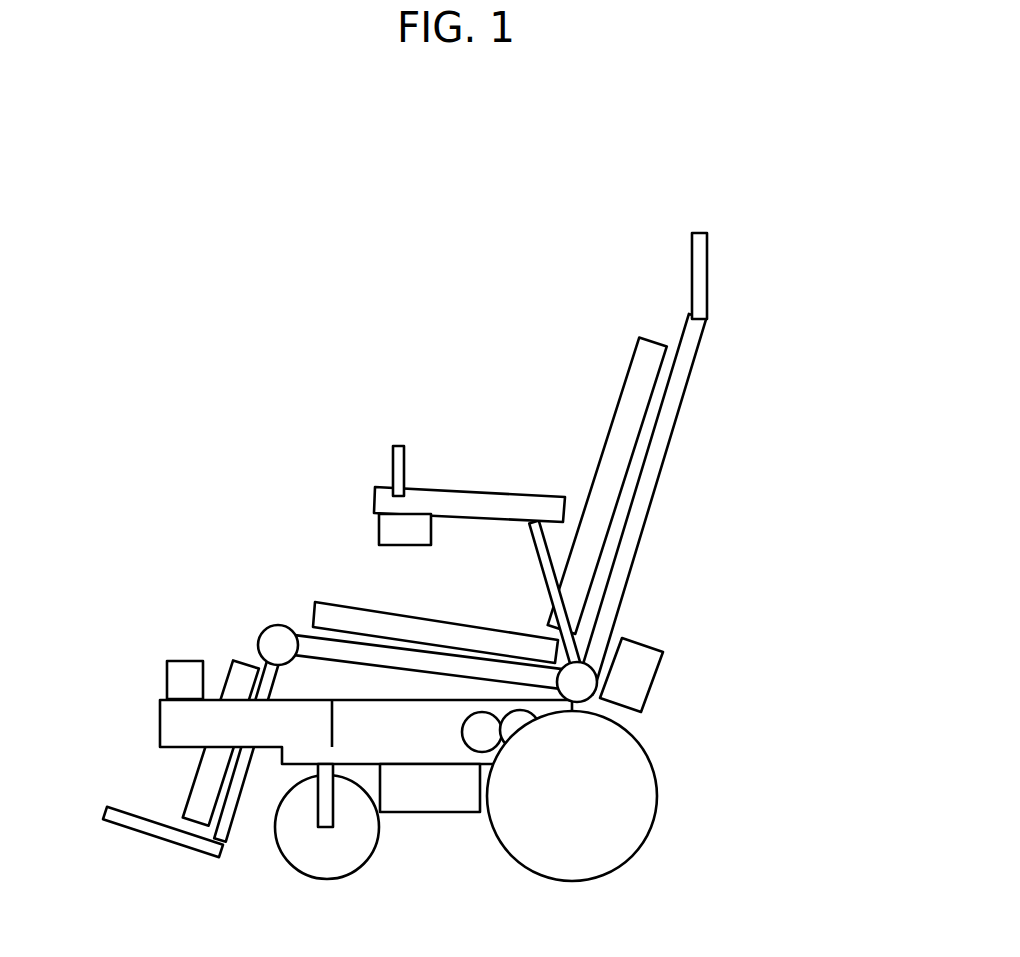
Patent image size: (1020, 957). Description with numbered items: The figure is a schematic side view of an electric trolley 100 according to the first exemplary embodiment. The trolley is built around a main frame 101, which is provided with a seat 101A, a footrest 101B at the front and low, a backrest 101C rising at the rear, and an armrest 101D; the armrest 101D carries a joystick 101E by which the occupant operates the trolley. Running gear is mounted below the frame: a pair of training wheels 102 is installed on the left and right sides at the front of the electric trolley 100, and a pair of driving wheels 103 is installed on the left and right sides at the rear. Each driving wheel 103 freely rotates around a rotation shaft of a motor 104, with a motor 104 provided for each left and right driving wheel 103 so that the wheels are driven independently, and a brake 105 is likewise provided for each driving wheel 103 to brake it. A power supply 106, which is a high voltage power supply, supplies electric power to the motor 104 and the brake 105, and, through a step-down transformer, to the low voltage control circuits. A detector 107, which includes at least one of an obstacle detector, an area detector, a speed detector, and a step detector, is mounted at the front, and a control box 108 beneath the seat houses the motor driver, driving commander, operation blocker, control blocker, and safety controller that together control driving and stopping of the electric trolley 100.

The electric trolley 100 is at (337, 158).
The main frame 101 is at (682, 470).
The seat 101A is at (343, 598).
The footrest 101B is at (150, 852).
The backrest 101C is at (647, 317).
The armrest 101D is at (515, 485).
The joystick 101E is at (398, 446).
The training wheel 102 is at (283, 855).
The driving wheel 103 is at (500, 858).
The motor 104 is at (520, 711).
The brake 105 is at (484, 712).
The power supply 106 is at (645, 640).
The detector 107 is at (184, 655).
The control box 108 is at (430, 812).